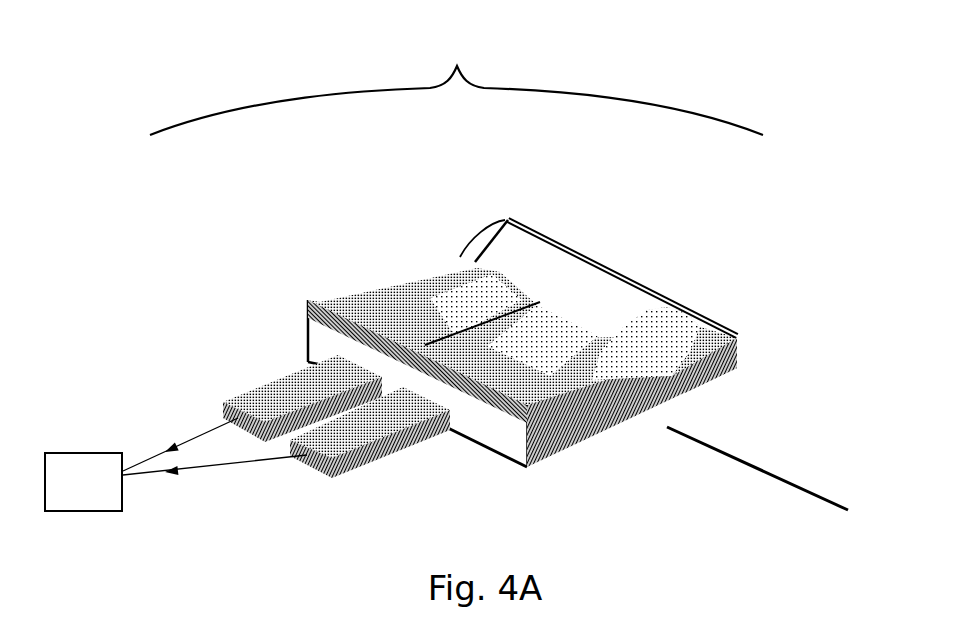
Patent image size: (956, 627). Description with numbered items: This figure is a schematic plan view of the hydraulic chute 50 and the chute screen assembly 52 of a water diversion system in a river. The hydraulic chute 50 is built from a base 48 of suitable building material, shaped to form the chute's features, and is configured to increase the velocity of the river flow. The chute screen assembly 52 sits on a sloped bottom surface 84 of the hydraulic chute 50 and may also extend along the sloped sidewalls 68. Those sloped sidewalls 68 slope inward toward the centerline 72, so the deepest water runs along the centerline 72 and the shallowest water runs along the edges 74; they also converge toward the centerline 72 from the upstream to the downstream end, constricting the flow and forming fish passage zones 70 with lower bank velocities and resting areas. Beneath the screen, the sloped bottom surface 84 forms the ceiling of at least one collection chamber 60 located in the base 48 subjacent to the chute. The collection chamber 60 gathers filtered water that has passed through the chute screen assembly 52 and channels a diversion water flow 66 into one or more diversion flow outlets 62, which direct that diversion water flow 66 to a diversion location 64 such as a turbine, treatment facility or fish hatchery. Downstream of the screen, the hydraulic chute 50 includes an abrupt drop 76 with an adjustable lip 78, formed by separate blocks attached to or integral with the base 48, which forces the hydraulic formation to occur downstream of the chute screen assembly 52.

The hydraulic chute 50 is at (456, 86).
The chute screen assembly 52 is at (491, 300).
The edges 74 is at (600, 267).
The sloped bottom surface 84 is at (583, 362).
The sloped sidewalls 68 is at (668, 378).
The fish passage zones 70 is at (662, 357).
The centerline 72 is at (760, 463).
The adjustable lip 78 is at (638, 405).
The abrupt drop 76 is at (578, 437).
The base 48 is at (508, 442).
The collection chamber 60 is at (397, 373).
The diversion flow outlets 62 is at (243, 425).
The diversion location 64 is at (45, 463).
The diversion water flow 66 is at (132, 473).